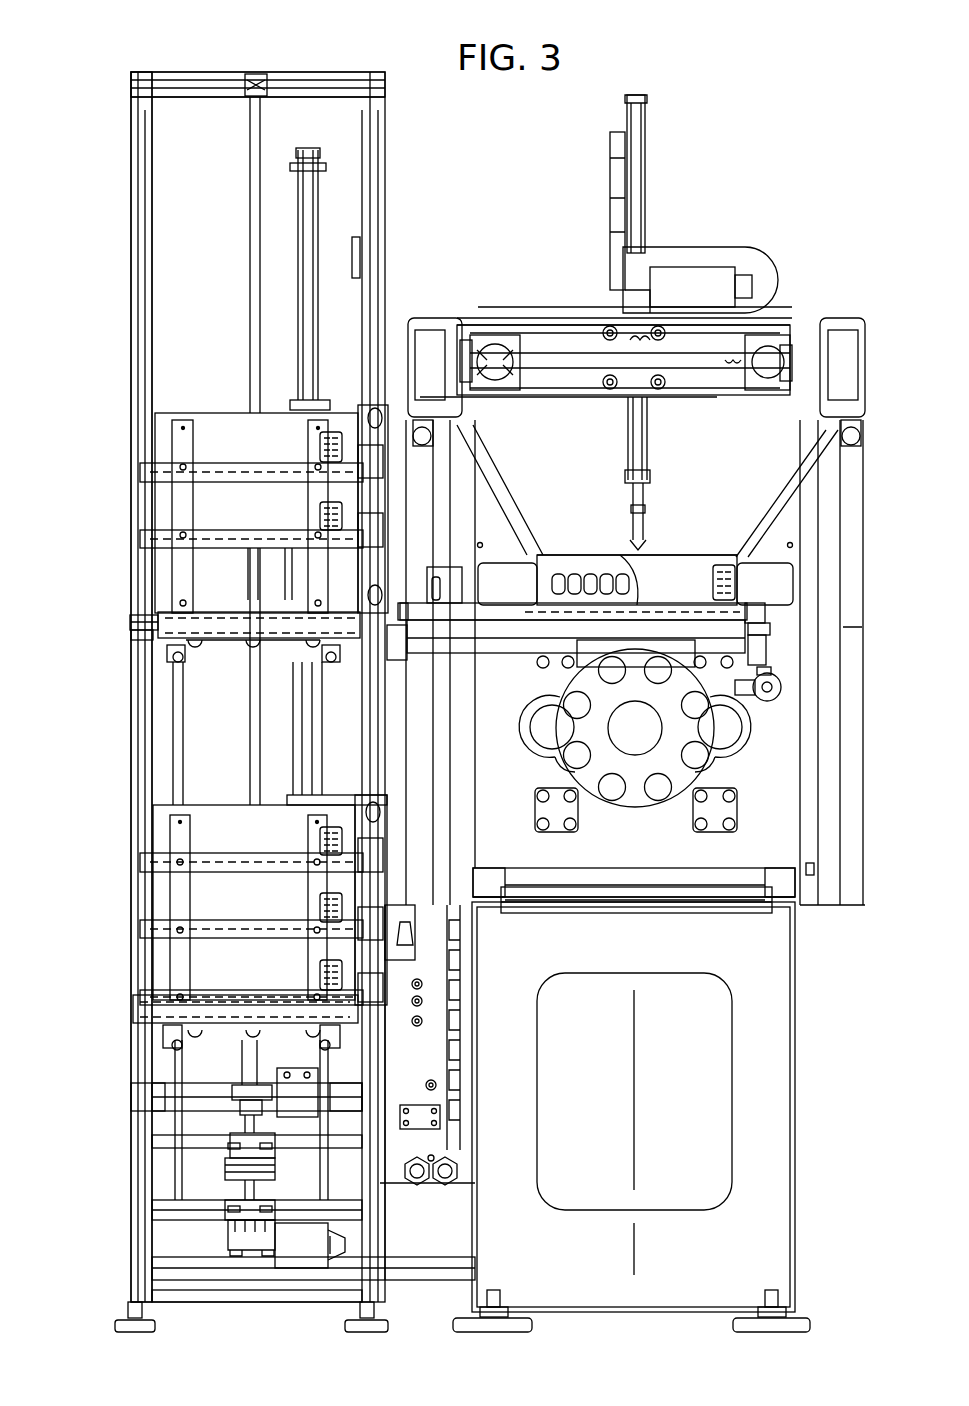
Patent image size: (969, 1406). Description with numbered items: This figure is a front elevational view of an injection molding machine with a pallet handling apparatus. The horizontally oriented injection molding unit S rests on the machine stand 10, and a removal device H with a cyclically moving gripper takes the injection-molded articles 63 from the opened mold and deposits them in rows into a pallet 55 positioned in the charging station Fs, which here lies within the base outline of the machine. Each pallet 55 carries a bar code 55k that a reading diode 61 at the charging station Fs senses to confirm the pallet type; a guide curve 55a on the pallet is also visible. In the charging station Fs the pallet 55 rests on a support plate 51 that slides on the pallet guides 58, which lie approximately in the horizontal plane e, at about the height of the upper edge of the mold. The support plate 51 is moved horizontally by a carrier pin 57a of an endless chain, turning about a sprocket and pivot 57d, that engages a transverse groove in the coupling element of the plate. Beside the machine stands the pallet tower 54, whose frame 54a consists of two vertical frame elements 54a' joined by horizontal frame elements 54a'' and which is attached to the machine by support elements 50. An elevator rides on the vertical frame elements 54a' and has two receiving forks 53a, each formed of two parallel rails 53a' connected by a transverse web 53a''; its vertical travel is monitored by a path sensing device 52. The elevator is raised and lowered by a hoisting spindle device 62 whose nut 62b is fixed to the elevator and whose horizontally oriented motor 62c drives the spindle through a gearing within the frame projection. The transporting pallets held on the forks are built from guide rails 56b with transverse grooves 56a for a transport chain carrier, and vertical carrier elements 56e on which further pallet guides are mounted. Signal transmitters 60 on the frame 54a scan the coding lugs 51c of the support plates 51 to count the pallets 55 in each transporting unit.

The machine stand 10 is at (722, 1260).
The support elements 50 is at (393, 325).
The support plate 51 is at (555, 613).
The coding lugs 51c is at (373, 460).
The path sensing device 52 is at (318, 192).
The receiving forks 53a is at (246, 824).
The parallel rails 53a' is at (269, 805).
The transverse web 53a'' is at (253, 688).
The pallet tower 54 is at (310, 70).
The frame 54a is at (98, 687).
The vertical frame elements 54a' is at (311, 698).
The horizontal frame elements 54a'' is at (258, 58).
The pallet 55 is at (232, 423).
The pallet guide curve 55a is at (628, 562).
The bar code 55k is at (320, 517).
The transverse grooves 56a is at (140, 633).
The guide rails 56b is at (135, 612).
The vertical carrier elements 56e is at (183, 425).
The carrier pin 57a is at (765, 584).
The pivot 57d is at (772, 701).
The pallet guides 58 is at (485, 610).
The signal transmitters 60 is at (390, 421).
The reading diode 61 is at (453, 580).
The lift spindle unit 62 is at (266, 1270).
The nut 62b is at (258, 250).
The motor 62c is at (307, 1250).
The injection-molded articles 63 is at (567, 575).
The horizontal plane e is at (107, 622).
The charging station Fs is at (700, 555).
The removal device H is at (650, 182).
The injection molding unit S is at (636, 85).